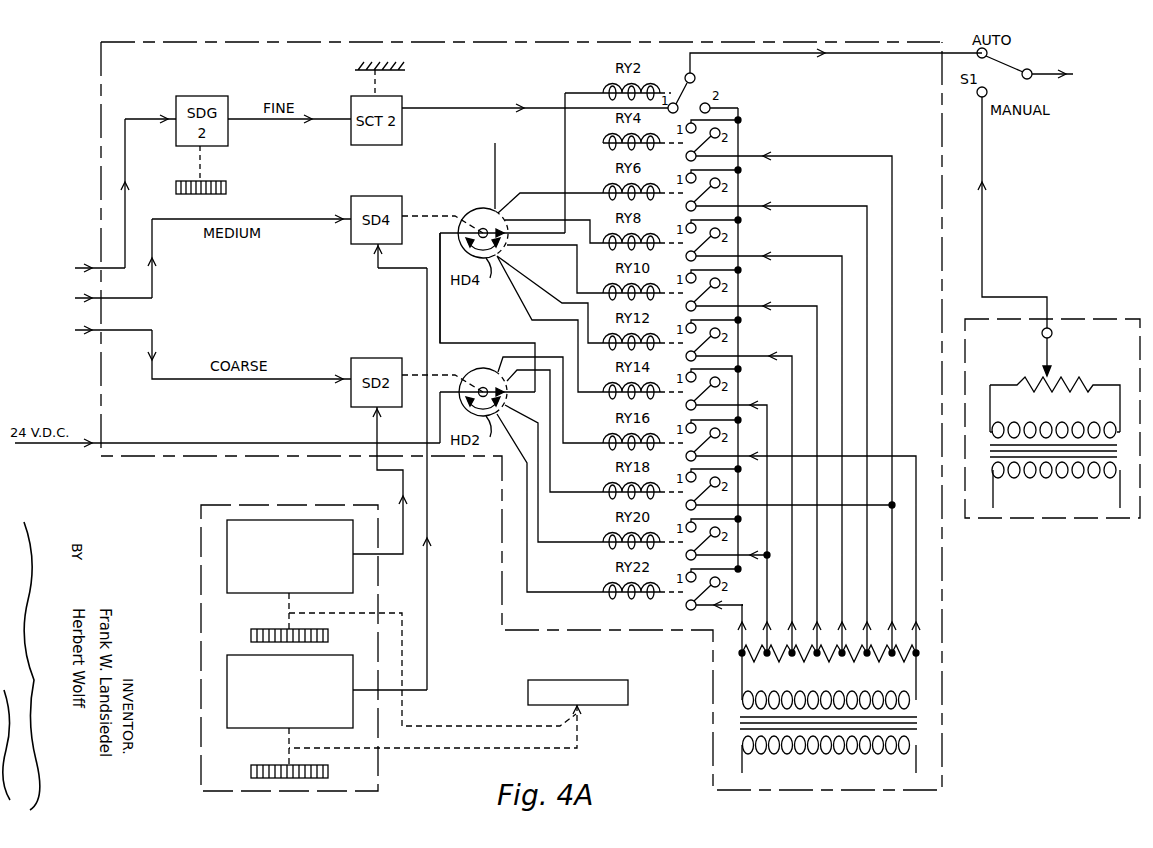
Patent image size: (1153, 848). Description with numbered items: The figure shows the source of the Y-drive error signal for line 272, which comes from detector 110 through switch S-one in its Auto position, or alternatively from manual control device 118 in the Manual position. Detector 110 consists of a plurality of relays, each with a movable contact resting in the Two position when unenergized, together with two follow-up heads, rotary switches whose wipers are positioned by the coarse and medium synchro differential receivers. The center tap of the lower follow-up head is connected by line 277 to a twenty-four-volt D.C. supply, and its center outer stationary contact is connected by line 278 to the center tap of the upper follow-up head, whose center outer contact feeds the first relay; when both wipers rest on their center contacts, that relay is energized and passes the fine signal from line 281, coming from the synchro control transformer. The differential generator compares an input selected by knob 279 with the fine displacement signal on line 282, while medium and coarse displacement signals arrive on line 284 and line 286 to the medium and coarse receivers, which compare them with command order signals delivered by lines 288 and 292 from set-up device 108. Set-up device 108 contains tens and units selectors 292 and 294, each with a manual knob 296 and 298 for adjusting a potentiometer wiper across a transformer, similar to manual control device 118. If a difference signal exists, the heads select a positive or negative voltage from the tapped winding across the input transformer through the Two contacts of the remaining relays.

The set-up device 108 is at (201, 593).
The detector 110 is at (905, 649).
The manual control device 118 is at (1005, 519).
The line 272 is at (1045, 78).
The line 277 is at (137, 441).
The line 278 is at (440, 330).
The knob 279 is at (220, 185).
The line 281 is at (535, 94).
The line 282 is at (80, 265).
The line 284 is at (80, 296).
The line 286 is at (80, 328).
The line 288 is at (427, 590).
The selector 292 is at (227, 545).
The selector 294 is at (227, 702).
The manual knob 296 is at (328, 636).
The manual knob 298 is at (328, 772).